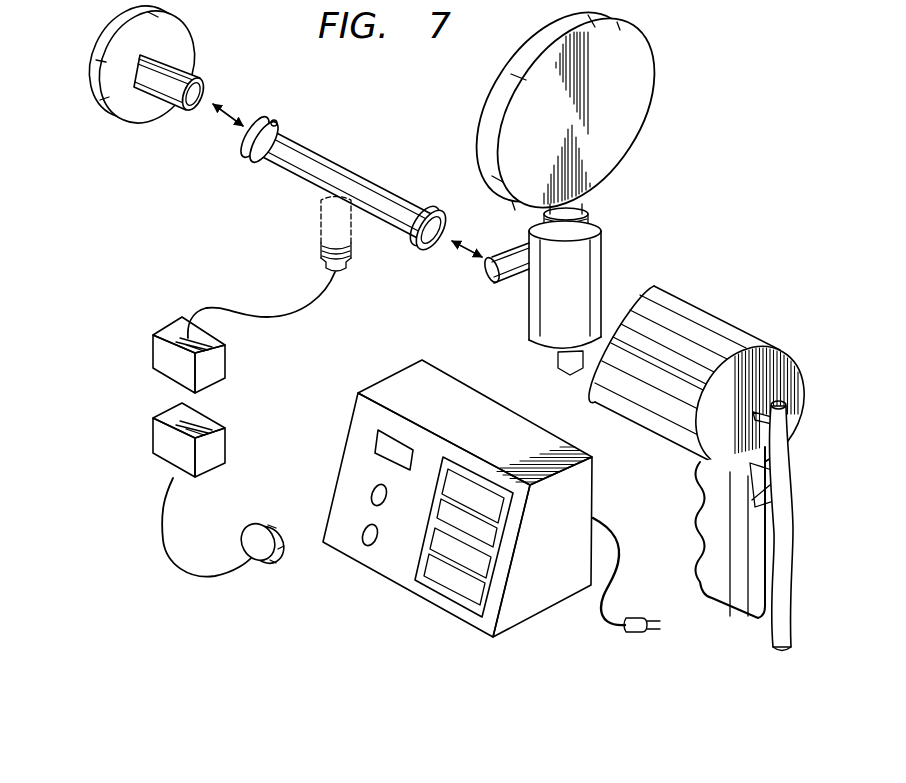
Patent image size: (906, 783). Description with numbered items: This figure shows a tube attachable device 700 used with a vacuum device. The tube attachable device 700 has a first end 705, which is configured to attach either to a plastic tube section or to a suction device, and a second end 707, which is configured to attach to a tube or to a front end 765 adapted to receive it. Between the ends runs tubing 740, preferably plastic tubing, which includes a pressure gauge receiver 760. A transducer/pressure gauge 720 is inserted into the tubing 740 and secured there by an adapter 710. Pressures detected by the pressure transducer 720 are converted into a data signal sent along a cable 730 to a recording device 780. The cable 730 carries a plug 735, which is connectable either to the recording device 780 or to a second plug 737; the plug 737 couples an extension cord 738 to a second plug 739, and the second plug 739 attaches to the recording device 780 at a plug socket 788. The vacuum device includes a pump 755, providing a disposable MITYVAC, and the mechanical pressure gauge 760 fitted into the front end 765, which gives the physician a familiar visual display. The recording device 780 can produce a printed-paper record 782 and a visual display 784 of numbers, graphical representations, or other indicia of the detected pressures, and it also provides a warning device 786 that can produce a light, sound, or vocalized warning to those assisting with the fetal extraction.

The tube attachable device 700 is at (113, 177).
The first end 705 is at (268, 118).
The second end 707 is at (431, 212).
The adapter 710 is at (364, 268).
The transducer/pressure gauge 720 is at (318, 232).
The cable 730 is at (200, 310).
The plug 735 is at (150, 352).
The second plug 737 is at (150, 434).
The extension cord 738 is at (161, 530).
The second plug 739 is at (256, 566).
The tubing 740 is at (362, 168).
The pump 755 is at (739, 322).
The pressure gauge 760 is at (658, 78).
The front end 765 is at (540, 319).
The recording device 780 is at (596, 488).
The printed-paper record 782 is at (470, 471).
The visual display 784 is at (398, 441).
The warning device 786 is at (371, 486).
The plug socket 788 is at (365, 548).